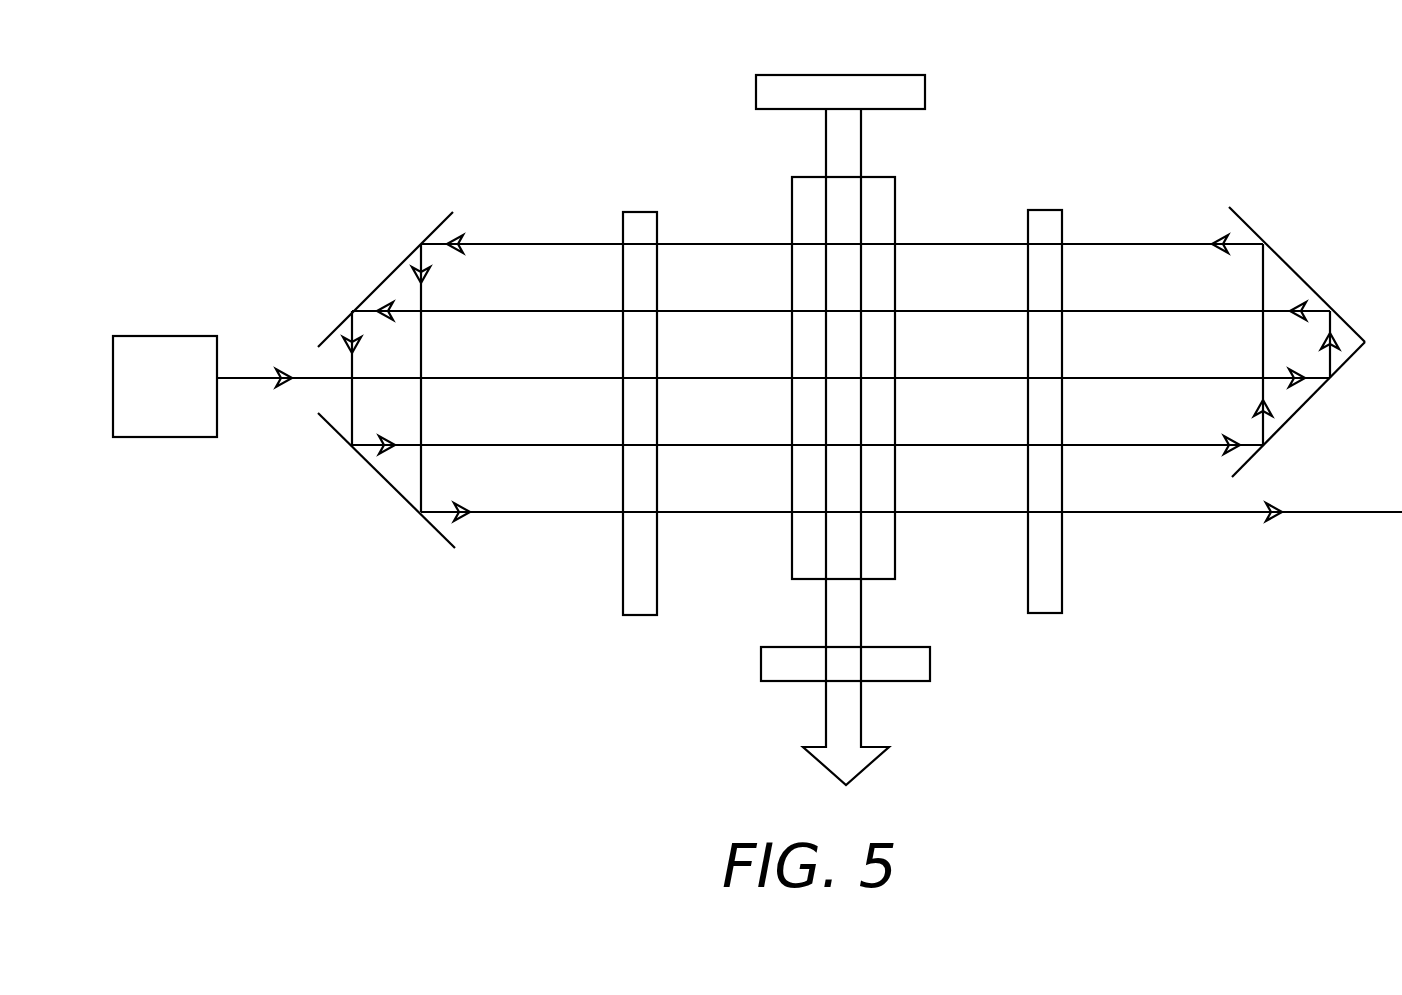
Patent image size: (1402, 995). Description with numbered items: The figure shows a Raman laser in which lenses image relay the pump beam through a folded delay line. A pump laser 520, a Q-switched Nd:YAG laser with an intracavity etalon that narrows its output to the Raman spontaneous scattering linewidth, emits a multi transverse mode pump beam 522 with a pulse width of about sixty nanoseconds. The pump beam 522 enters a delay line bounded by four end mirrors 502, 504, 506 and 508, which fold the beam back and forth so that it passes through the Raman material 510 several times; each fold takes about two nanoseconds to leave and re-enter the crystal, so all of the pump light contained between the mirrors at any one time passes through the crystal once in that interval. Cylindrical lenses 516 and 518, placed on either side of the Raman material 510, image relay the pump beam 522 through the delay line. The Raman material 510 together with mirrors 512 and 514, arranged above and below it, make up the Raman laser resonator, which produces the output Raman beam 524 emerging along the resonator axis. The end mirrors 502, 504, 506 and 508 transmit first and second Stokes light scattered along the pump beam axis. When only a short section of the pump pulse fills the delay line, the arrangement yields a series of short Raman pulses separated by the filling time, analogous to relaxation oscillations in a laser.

The end mirror 502 is at (382, 280).
The end mirror 504 is at (393, 488).
The end mirror 506 is at (1303, 278).
The end mirror 508 is at (1302, 408).
The Raman material 510 is at (895, 217).
The mirror 512 is at (927, 95).
The mirror 514 is at (930, 672).
The cylindrical lens 516 is at (1065, 595).
The cylindrical lens 518 is at (623, 558).
The pump laser 520 is at (148, 335).
The pump beam 522 is at (233, 380).
The output Raman beam 524 is at (865, 728).